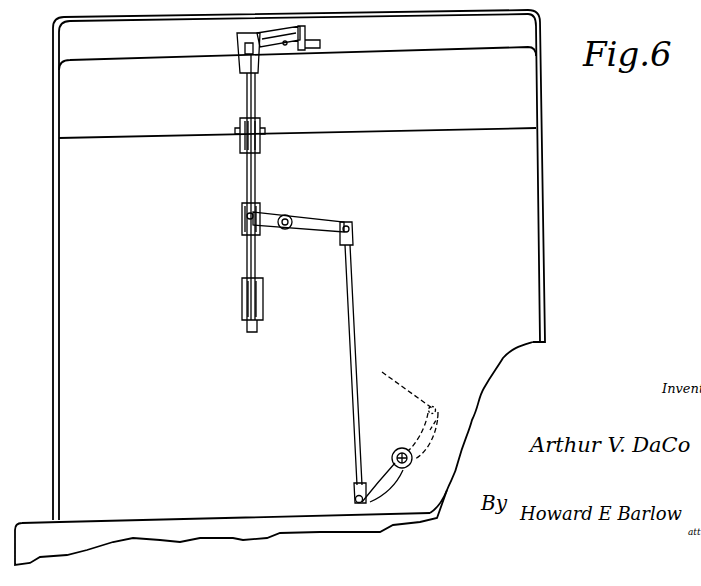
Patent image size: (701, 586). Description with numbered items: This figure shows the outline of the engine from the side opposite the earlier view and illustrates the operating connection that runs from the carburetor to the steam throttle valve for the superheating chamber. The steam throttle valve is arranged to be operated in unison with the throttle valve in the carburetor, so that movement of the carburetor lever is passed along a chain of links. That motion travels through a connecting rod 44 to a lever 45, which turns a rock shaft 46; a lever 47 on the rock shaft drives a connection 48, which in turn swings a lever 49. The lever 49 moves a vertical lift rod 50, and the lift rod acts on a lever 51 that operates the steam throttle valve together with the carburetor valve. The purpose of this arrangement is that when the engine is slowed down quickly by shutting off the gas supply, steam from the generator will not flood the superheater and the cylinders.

The connecting rod 44 is at (397, 380).
The lever 45 is at (440, 425).
The rock shaft 46 is at (411, 455).
The lever 47 is at (407, 478).
The connection 48 is at (352, 412).
The lever 49 is at (316, 224).
The lift rod 50 is at (247, 180).
The lever 51 is at (282, 44).